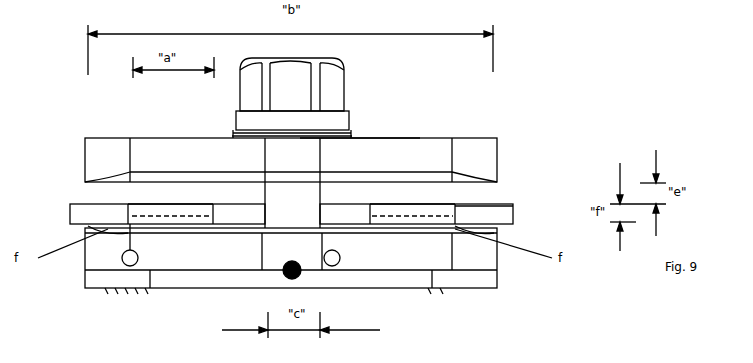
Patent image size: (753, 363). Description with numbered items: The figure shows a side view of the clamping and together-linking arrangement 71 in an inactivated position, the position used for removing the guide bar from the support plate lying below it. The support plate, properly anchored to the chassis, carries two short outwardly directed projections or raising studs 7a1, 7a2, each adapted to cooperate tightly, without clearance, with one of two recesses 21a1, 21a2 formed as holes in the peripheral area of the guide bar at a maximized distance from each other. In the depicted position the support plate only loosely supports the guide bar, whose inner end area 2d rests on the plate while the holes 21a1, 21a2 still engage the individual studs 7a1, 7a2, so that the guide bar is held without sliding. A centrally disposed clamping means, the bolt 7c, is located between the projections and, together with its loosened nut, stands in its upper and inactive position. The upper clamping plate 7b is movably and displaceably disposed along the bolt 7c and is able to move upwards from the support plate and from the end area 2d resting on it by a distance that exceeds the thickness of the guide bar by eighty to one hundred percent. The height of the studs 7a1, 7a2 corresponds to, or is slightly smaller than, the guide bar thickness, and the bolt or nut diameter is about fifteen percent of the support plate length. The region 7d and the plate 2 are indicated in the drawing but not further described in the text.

The clamping plate 7b is at (103, 156).
The clamping arrangement 71 is at (387, 136).
The bolt through-hole portion 7d is at (278, 183).
The bolt 7c is at (249, 118).
The base plate 2 is at (515, 212).
The inner end area of the guide bar 2d is at (477, 204).
The projection 7a1 is at (433, 204).
The projection 7a2 is at (128, 210).
The recess 21a2 is at (173, 216).
The recess 21a1 is at (398, 216).